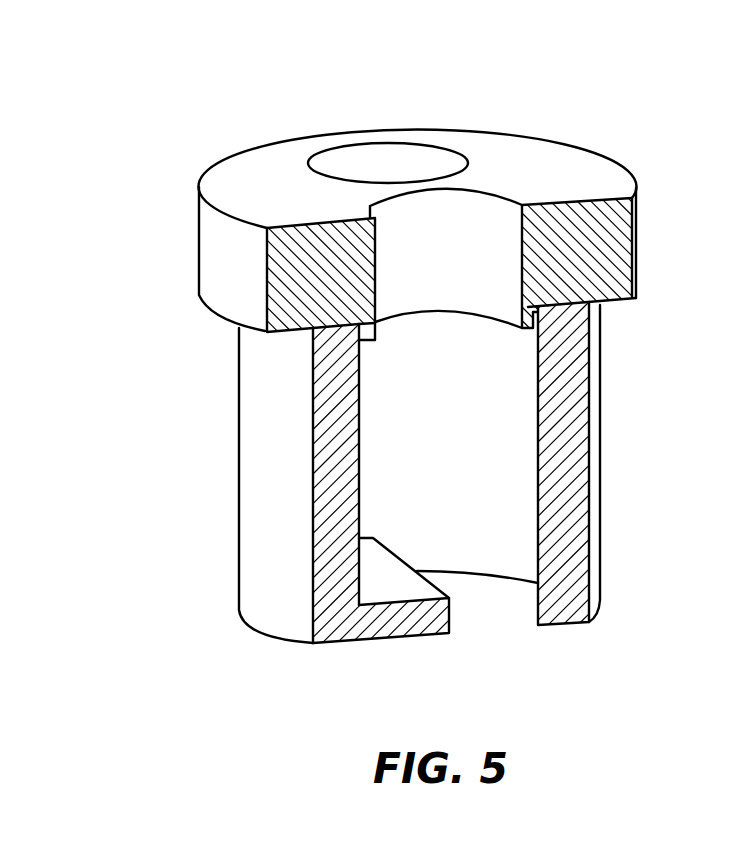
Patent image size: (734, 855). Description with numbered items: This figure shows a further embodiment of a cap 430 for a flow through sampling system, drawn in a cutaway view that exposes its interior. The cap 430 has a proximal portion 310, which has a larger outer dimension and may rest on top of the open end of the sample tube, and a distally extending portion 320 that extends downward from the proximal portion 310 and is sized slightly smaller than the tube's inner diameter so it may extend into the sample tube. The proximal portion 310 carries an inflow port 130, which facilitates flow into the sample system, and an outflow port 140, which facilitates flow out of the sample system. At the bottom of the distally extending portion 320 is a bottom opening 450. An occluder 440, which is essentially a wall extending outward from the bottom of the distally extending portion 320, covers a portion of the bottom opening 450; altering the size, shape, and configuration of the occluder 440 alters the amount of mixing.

The inflow port 130 is at (472, 232).
The outflow port 140 is at (390, 172).
The proximal portion 310 is at (248, 175).
The distally extending portion 320 is at (263, 473).
The cap 430 is at (662, 411).
The occluder 440 is at (412, 623).
The bottom opening 450 is at (482, 615).